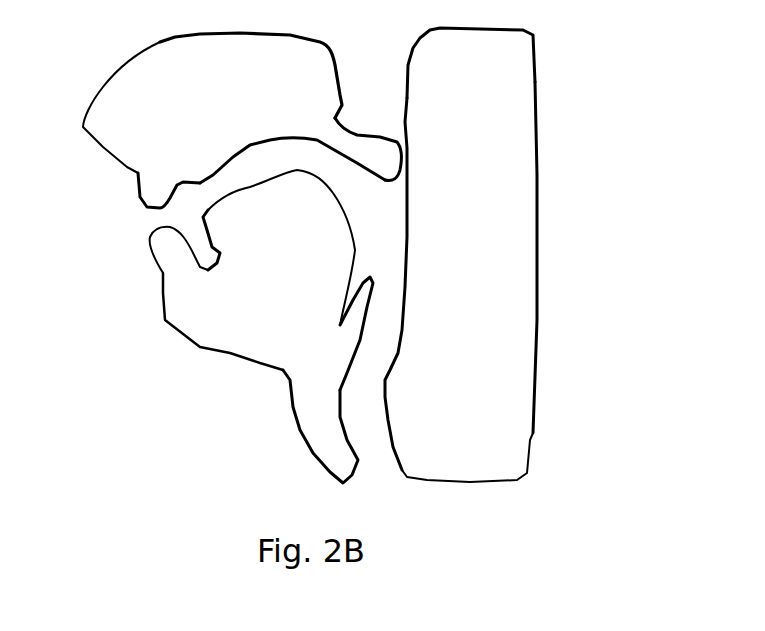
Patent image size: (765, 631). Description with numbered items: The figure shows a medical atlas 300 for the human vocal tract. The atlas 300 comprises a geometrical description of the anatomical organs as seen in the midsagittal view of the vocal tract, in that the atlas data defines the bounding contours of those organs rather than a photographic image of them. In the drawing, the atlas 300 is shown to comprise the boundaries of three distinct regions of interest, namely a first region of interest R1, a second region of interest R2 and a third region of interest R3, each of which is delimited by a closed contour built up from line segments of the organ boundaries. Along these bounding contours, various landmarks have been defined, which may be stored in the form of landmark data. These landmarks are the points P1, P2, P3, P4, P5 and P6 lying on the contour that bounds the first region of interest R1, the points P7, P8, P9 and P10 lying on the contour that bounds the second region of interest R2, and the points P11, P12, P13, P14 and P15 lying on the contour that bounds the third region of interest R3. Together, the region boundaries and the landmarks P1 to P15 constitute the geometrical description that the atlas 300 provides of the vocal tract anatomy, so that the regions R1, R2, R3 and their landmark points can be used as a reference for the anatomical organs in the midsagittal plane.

The medical atlas 300 is at (112, 371).
The first region of interest R1 is at (252, 326).
The second region of interest R2 is at (461, 255).
The third region of interest R3 is at (242, 125).
The landmark P1 is at (351, 333).
The landmark P2 is at (281, 247).
The landmark P3 is at (217, 249).
The landmark P4 is at (170, 250).
The landmark P5 is at (223, 321).
The landmark P6 is at (320, 426).
The landmark P7 is at (403, 284).
The landmark P8 is at (471, 63).
The landmark P9 is at (521, 257).
The landmark P10 is at (467, 457).
The landmark P11 is at (292, 160).
The landmark P12 is at (368, 149).
The landmark P13 is at (251, 75).
The landmark P14 is at (121, 107).
The landmark P15 is at (155, 195).